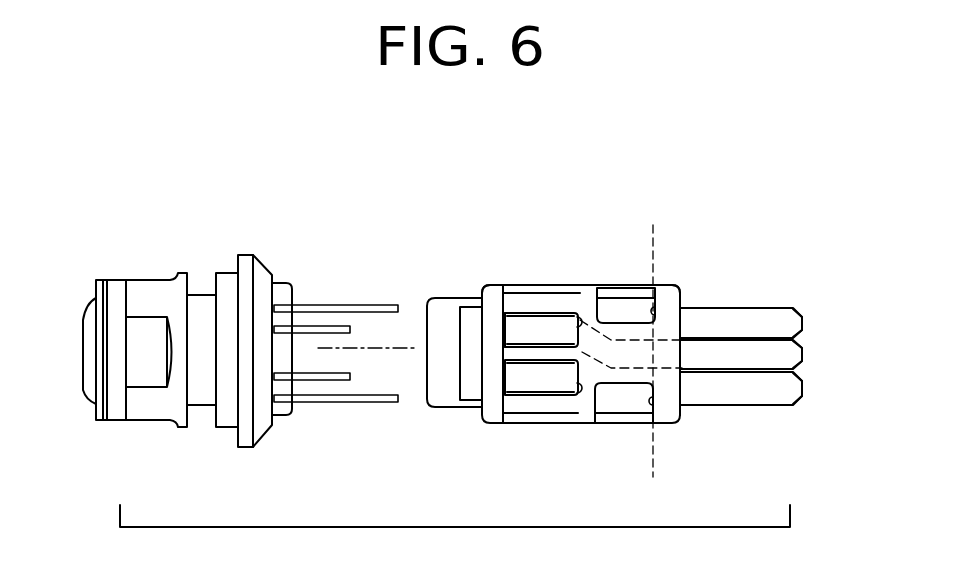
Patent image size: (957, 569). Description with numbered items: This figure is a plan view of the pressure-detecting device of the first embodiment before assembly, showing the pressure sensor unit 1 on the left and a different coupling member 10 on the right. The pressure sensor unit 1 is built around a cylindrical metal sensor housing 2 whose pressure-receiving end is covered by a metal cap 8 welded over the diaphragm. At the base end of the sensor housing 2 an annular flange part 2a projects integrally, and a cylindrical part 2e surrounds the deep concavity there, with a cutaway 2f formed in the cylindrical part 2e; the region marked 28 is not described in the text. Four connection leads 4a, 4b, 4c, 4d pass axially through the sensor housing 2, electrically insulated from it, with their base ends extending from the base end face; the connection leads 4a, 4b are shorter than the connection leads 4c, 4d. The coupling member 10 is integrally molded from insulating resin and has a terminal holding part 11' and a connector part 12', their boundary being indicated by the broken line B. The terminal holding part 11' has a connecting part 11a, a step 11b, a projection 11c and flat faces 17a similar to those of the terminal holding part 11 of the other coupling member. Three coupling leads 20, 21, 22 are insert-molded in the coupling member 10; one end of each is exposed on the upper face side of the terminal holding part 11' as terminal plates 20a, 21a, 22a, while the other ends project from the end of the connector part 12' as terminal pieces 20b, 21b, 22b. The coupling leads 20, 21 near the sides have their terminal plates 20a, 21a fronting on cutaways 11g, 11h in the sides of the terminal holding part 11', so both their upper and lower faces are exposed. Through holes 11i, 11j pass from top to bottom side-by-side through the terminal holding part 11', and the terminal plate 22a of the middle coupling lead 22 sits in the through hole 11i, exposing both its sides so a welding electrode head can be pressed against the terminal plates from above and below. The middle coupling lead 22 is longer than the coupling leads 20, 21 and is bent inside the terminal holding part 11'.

The pressure sensor unit 1 is at (218, 250).
The sensor housing 2 is at (151, 285).
The cap 8 is at (83, 318).
The neck portion 28 is at (212, 410).
The annular flange part 2a is at (243, 448).
The cylindrical part 2e is at (280, 422).
The cutaway 2f is at (298, 283).
The connection lead 4a is at (333, 336).
The connection lead 4b is at (334, 365).
The connection lead 4c is at (364, 305).
The connection lead 4d is at (367, 403).
The coupling member 10 is at (628, 182).
The terminal holding part 11 is at (581, 354).
The connecting part 11a is at (438, 408).
The step 11b is at (478, 300).
The projection 11c is at (475, 395).
The terminal holding part 11' is at (543, 245).
The flat faces 17a is at (580, 296).
The terminal plate 22a is at (532, 320).
The through hole 11i is at (573, 318).
The through hole 11j is at (565, 398).
The terminal plate 20a is at (620, 303).
The terminal plate 21a is at (615, 406).
The cutaway 11h is at (655, 409).
The cutaway 11g is at (682, 304).
The connector part 12' is at (682, 258).
The broken line B is at (659, 332).
The coupling lead 20 is at (752, 318).
The coupling lead 22 is at (748, 363).
The coupling lead 21 is at (728, 399).
The terminal piece 20b is at (789, 323).
The terminal piece 22b is at (789, 354).
The terminal piece 21b is at (789, 392).